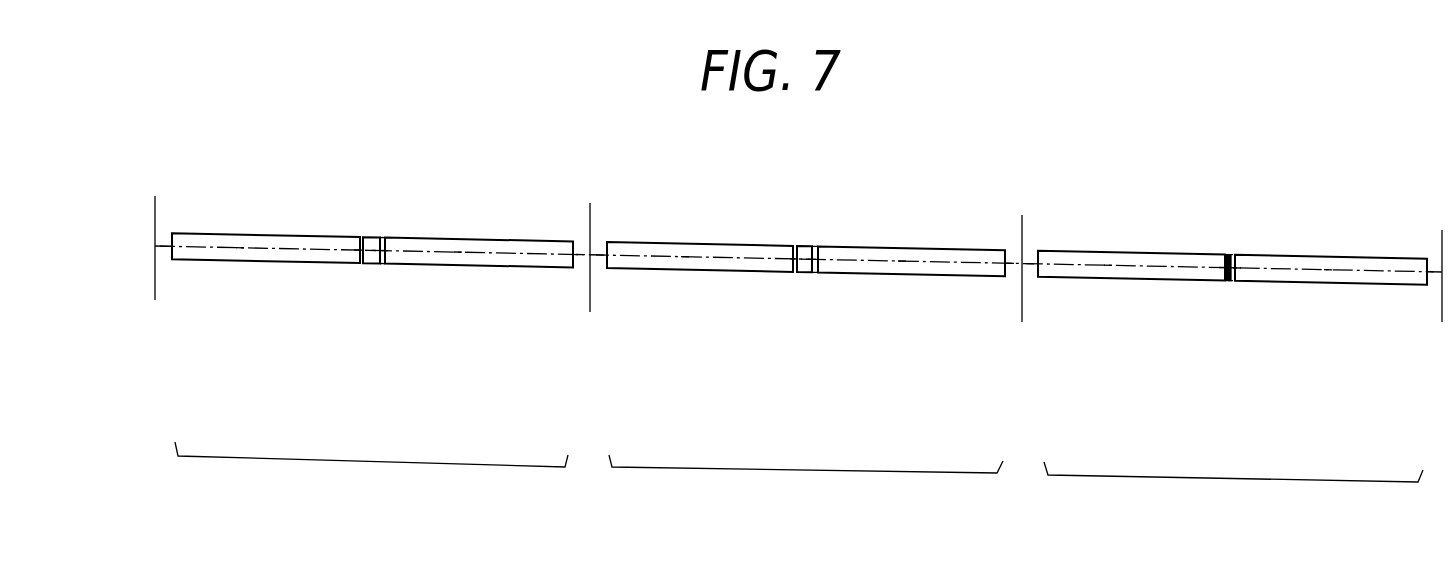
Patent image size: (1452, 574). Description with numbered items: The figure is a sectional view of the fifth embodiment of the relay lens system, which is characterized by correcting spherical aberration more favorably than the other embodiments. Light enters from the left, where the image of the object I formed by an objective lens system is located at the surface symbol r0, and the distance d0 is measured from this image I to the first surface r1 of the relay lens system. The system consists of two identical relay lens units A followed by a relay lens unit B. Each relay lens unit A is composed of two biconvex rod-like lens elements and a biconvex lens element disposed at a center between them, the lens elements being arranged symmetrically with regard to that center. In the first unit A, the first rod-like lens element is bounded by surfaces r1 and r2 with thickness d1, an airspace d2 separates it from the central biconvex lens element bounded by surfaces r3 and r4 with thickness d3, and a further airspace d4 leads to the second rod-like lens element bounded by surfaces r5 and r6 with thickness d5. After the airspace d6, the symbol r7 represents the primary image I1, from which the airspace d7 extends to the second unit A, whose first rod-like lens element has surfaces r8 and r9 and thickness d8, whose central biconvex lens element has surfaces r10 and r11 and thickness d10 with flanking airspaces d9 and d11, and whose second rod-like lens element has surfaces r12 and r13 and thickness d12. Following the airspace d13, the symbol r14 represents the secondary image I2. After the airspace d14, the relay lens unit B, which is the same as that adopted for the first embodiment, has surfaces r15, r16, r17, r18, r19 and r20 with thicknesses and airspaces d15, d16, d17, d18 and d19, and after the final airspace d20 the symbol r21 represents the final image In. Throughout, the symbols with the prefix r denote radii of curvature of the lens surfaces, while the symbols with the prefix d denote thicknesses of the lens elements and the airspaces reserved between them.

The image of object formed by objective lens system r0 is at (155, 212).
The first surface of relay lens system r1 is at (172, 233).
The radius of curvature r2 is at (360, 237).
The radius of curvature r3 is at (363, 237).
The radius of curvature r4 is at (380, 237).
The radius of curvature r5 is at (385, 237).
The radius of curvature r6 is at (573, 241).
The primary image r7 is at (590, 213).
The radius of curvature r8 is at (607, 242).
The radius of curvature r9 is at (793, 246).
The radius of curvature r10 is at (797, 246).
The radius of curvature r11 is at (812, 246).
The radius of curvature r12 is at (818, 246).
The radius of curvature r13 is at (1005, 250).
The secondary image r14 is at (1022, 215).
The radius of curvature r15 is at (1038, 251).
The radius of curvature r16 is at (1225, 255).
The radius of curvature r17 is at (1230, 255).
The radius of curvature r18 is at (1234, 255).
The radius of curvature r19 is at (1240, 257).
The radius of curvature r20 is at (1427, 259).
The final image r21 is at (1442, 230).
The distance from image of object to first surface d0 is at (178, 250).
The thickness of lens element d1 is at (240, 248).
The airspace d2 is at (360, 258).
The thickness of lens element d3 is at (375, 255).
The airspace d4 is at (383, 255).
The thickness of lens element d5 is at (458, 253).
The airspace d6 is at (580, 258).
The airspace d7 is at (599, 260).
The thickness of lens element d8 is at (685, 258).
The airspace d9 is at (795, 263).
The thickness of lens element d10 is at (805, 263).
The airspace d11 is at (812, 263).
The thickness of lens element d12 is at (902, 263).
The airspace d13 is at (1010, 265).
The airspace d14 is at (1030, 265).
The thickness of lens element d15 is at (1108, 266).
The airspace d16 is at (1223, 268).
The thickness of lens element d17 is at (1233, 268).
The airspace d18 is at (1237, 278).
The thickness of lens element d19 is at (1328, 268).
The airspace d20 is at (1430, 262).
The primary image formed by objective lens system I is at (155, 295).
The primary image I1 is at (590, 307).
The secondary image I2 is at (1022, 317).
The final image In is at (1442, 317).
The relay lens unit A is at (589, 475).
The relay lens unit B is at (1233, 488).